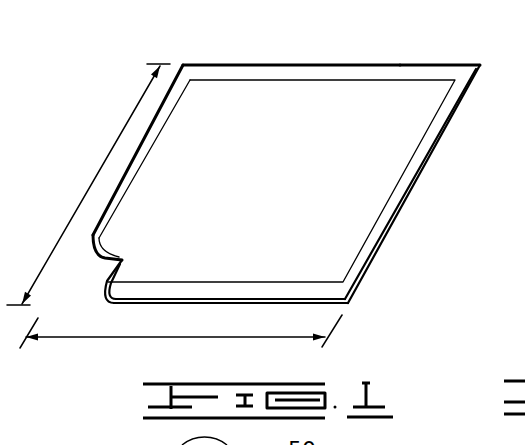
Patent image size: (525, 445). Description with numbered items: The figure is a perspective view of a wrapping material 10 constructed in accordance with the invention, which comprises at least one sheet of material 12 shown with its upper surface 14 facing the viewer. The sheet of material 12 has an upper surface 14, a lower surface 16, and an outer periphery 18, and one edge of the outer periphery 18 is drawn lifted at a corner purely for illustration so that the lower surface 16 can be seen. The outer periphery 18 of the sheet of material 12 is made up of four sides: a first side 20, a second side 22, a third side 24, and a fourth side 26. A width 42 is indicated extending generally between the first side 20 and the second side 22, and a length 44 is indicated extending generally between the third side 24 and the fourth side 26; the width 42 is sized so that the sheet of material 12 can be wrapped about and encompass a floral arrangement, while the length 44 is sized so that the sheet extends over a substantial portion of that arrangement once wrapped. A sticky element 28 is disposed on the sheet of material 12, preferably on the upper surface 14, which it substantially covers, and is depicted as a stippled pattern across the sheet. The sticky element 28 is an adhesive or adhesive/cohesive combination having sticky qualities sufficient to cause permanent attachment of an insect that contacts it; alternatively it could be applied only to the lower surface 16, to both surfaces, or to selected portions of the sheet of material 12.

The wrapping material 10 is at (218, 50).
The sheet of material 12 is at (387, 63).
The upper surface 14 is at (442, 72).
The lower surface 16 is at (103, 259).
The outer periphery 18 is at (313, 303).
The first side 20 is at (407, 197).
The second side 22 is at (132, 155).
The third side 24 is at (255, 64).
The fourth side 26 is at (213, 303).
The sticky element 28 is at (350, 233).
The width 42 is at (138, 339).
The length 44 is at (95, 182).